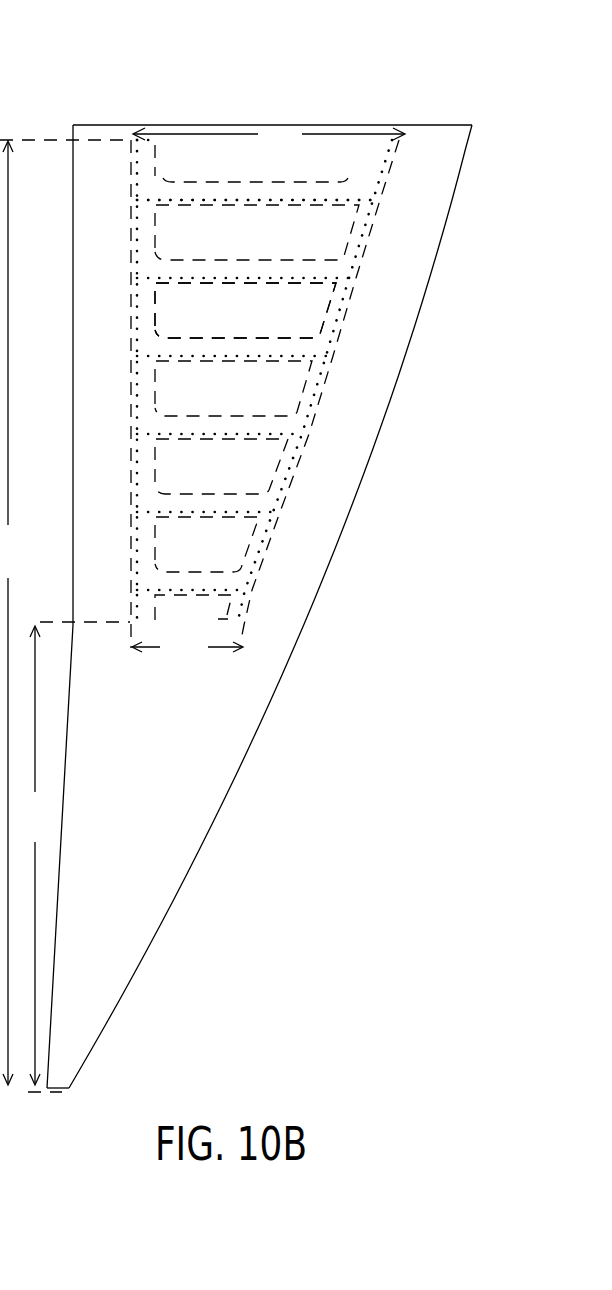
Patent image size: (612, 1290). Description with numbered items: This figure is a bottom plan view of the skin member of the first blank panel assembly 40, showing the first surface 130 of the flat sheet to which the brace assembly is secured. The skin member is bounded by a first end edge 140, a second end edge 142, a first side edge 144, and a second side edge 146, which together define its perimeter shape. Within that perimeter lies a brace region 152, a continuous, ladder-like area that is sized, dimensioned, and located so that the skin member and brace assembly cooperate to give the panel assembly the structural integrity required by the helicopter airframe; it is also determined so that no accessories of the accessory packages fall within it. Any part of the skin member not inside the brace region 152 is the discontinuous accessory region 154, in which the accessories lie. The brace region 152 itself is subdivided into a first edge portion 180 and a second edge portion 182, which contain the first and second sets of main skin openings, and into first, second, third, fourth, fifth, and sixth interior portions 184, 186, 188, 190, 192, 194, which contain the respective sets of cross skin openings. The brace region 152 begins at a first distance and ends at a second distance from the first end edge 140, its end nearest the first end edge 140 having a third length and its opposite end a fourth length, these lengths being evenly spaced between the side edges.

The first blank panel assembly 40 is at (268, 98).
The first surface 130 is at (207, 791).
The first end edge 140 is at (62, 1093).
The second end edge 142 is at (73, 399).
The first side edge 144 is at (313, 125).
The second side edge 146 is at (365, 479).
The brace region 152 is at (315, 345).
The accessory region 154 is at (201, 246).
The first edge portion 180 is at (133, 497).
The second edge portion 182 is at (256, 584).
The first interior portion 184 is at (220, 549).
The second interior portion 186 is at (240, 467).
The third interior portion 188 is at (260, 392).
The fourth interior portion 190 is at (285, 313).
The fifth interior portion 192 is at (300, 250).
The sixth interior portion 194 is at (322, 168).